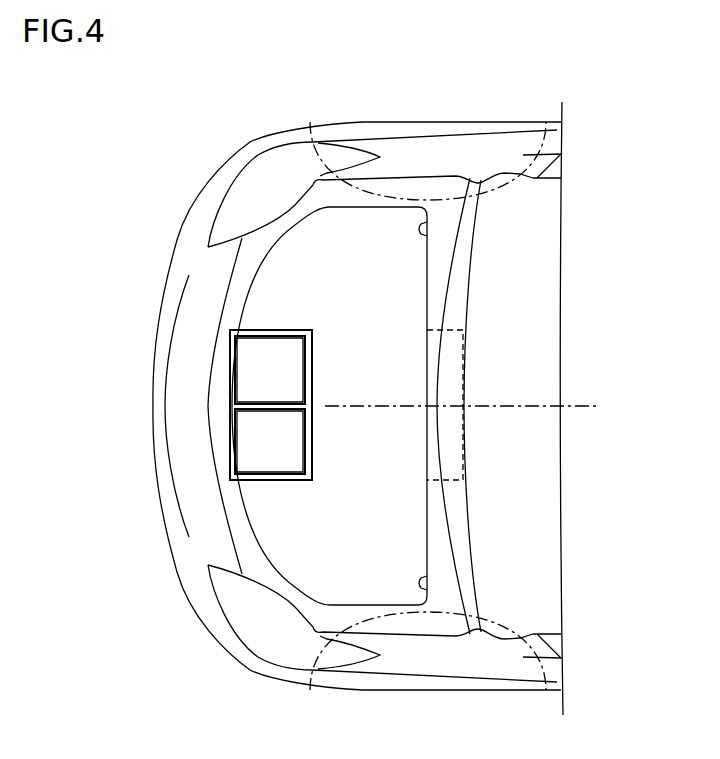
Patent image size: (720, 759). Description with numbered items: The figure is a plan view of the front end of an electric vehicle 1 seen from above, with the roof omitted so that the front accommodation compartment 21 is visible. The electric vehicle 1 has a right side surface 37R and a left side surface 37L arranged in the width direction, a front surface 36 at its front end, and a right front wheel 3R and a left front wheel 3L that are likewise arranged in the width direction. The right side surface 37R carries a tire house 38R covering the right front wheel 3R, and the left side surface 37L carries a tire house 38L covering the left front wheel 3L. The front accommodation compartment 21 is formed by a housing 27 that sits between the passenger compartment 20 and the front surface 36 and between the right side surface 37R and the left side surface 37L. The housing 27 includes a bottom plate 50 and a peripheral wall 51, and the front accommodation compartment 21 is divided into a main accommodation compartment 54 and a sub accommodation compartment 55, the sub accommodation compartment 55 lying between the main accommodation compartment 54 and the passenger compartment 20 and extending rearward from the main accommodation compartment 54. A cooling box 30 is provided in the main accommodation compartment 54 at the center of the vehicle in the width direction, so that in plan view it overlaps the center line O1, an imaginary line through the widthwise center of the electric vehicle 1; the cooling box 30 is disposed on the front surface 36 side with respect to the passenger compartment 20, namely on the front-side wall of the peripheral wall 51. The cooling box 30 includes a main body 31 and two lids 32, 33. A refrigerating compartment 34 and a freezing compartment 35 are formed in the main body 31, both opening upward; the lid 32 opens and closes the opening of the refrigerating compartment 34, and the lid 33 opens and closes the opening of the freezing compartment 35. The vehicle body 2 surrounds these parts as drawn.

The electric vehicle 1 is at (136, 138).
The vehicle body 2 is at (550, 285).
The right front wheel 3R is at (344, 140).
The left front wheel 3L is at (342, 672).
The passenger compartment 20 is at (550, 320).
The front accommodation compartment 21 is at (260, 535).
The housing 27 is at (646, 535).
The cooling box 30 is at (90, 372).
The main body 31 is at (247, 407).
The lid 32 is at (247, 381).
The lid 33 is at (247, 437).
The refrigerating compartment 34 is at (247, 350).
The freezing compartment 35 is at (247, 466).
The front surface 36 is at (172, 306).
The right side surface 37R is at (428, 121).
The left side surface 37L is at (428, 693).
The tire house 38R is at (296, 130).
The tire house 38L is at (296, 678).
The bottom plate 50 is at (400, 547).
The peripheral wall 51 is at (420, 577).
The main accommodation compartment 54 is at (400, 508).
The sub accommodation compartment 55 is at (465, 469).
The center line O1 is at (592, 404).